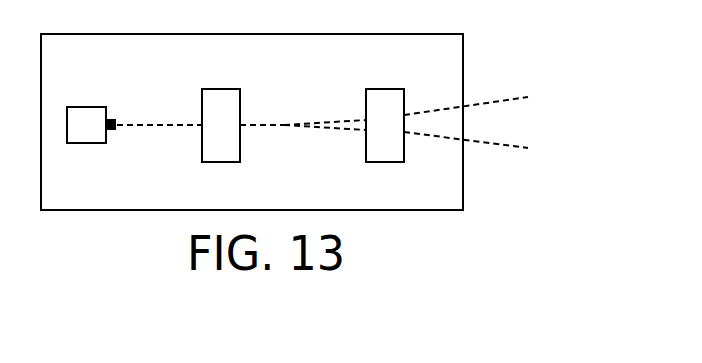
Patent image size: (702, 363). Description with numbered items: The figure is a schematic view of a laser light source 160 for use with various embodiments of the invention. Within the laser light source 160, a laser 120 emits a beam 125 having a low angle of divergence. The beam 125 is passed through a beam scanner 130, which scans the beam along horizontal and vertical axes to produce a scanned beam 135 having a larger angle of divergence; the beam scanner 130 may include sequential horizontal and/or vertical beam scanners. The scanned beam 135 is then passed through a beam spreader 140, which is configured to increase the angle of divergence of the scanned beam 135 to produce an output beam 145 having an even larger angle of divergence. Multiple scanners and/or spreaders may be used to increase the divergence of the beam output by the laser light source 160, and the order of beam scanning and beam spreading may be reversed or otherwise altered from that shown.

The laser 120 is at (87, 107).
The beam 125 is at (143, 128).
The beam scanner 130 is at (220, 89).
The scanned beam 135 is at (291, 123).
The beam spreader 140 is at (386, 89).
The output beam 145 is at (485, 103).
The laser light source 160 is at (252, 34).